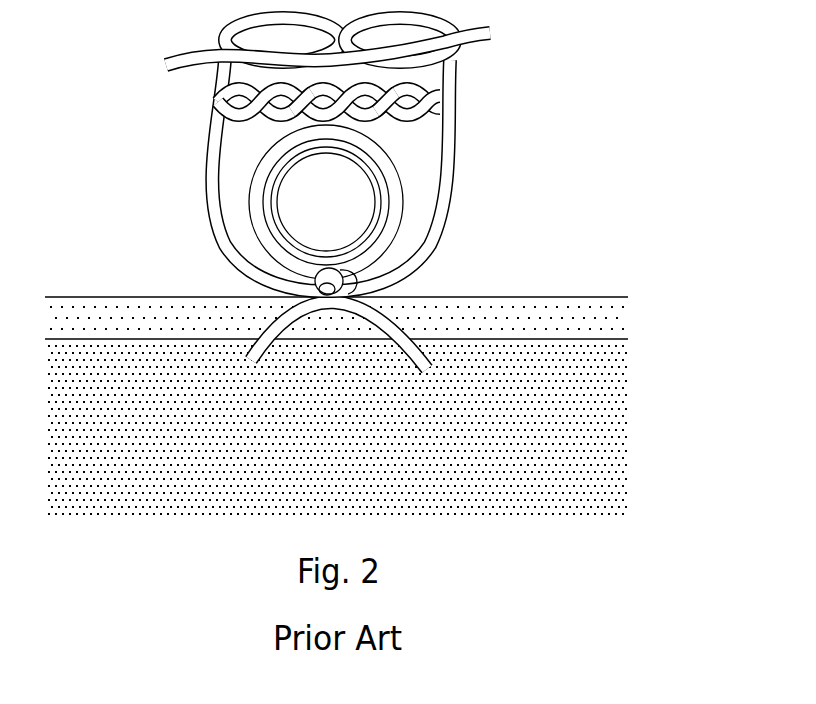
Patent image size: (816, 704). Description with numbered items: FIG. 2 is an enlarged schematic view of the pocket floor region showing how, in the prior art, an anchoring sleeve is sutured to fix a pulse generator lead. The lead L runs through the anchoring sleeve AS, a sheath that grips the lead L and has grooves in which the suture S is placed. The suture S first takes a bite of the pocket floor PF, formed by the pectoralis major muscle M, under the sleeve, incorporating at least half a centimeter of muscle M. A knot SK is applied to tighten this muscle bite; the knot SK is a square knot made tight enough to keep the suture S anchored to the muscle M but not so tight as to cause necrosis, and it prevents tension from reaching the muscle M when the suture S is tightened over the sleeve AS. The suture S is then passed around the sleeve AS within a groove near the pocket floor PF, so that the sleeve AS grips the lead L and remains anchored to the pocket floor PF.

The knot SK is at (432, 88).
The suture S is at (448, 201).
The lead L is at (281, 195).
The anchoring sleeve AS is at (258, 235).
The pocket floor PF is at (465, 391).
The muscle M is at (606, 493).